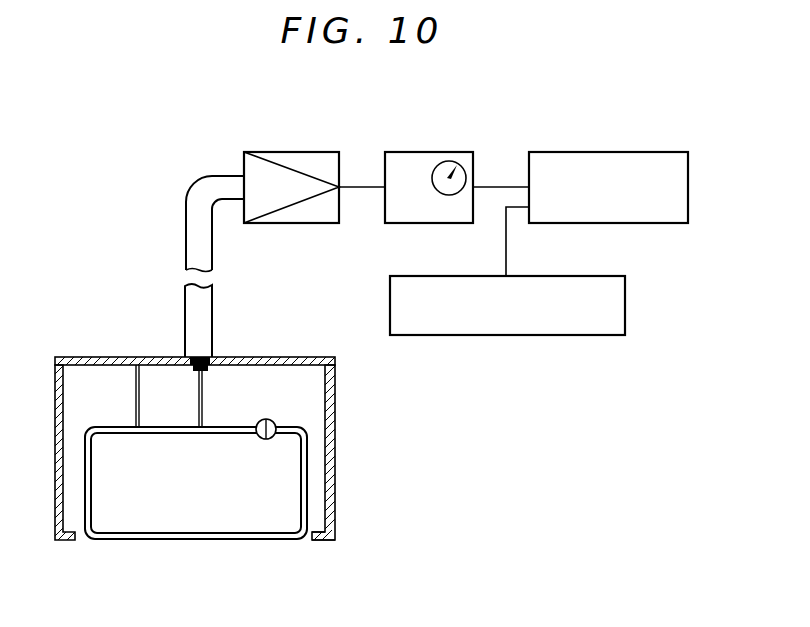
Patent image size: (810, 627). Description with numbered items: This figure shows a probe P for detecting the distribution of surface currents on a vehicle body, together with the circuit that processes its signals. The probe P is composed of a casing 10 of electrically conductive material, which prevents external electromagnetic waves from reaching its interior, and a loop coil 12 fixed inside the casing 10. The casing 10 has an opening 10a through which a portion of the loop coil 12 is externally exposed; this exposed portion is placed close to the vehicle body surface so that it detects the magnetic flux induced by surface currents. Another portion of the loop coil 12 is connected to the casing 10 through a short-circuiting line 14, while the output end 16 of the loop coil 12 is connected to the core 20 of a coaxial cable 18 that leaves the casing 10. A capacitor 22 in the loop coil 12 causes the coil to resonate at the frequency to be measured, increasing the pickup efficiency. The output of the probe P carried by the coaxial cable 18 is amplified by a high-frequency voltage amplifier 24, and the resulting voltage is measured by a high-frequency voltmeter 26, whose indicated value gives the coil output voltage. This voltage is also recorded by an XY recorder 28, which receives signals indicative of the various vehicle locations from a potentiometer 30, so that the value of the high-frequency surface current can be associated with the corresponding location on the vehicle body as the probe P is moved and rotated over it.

The casing 10 is at (337, 411).
The opening 10a is at (307, 545).
The loop coil 12 is at (307, 483).
The short-circuiting line 14 is at (134, 397).
The output end 16 is at (197, 397).
The coaxial cable 18 is at (213, 302).
The core 20 is at (207, 371).
The capacitor 22 is at (266, 419).
The high-frequency voltage amplifier 24 is at (288, 152).
The high-frequency voltmeter 26 is at (428, 152).
The XY recorder 28 is at (595, 152).
The potentiometer 30 is at (477, 336).
The probe P is at (55, 441).